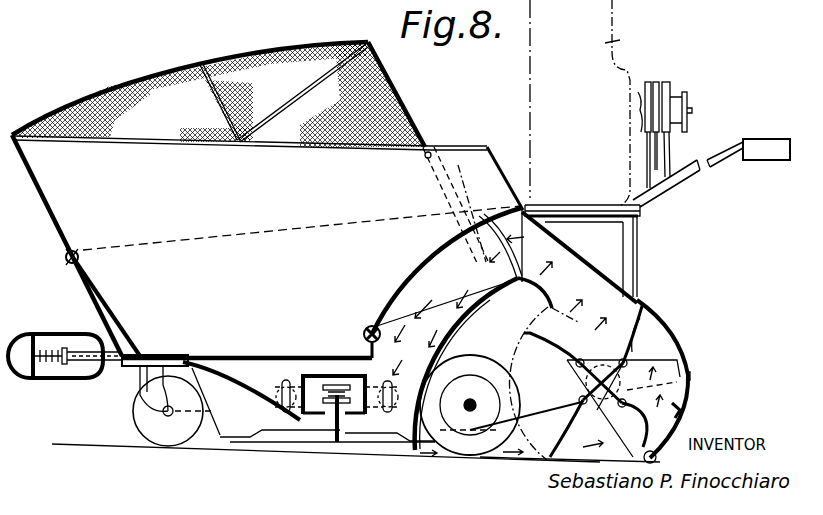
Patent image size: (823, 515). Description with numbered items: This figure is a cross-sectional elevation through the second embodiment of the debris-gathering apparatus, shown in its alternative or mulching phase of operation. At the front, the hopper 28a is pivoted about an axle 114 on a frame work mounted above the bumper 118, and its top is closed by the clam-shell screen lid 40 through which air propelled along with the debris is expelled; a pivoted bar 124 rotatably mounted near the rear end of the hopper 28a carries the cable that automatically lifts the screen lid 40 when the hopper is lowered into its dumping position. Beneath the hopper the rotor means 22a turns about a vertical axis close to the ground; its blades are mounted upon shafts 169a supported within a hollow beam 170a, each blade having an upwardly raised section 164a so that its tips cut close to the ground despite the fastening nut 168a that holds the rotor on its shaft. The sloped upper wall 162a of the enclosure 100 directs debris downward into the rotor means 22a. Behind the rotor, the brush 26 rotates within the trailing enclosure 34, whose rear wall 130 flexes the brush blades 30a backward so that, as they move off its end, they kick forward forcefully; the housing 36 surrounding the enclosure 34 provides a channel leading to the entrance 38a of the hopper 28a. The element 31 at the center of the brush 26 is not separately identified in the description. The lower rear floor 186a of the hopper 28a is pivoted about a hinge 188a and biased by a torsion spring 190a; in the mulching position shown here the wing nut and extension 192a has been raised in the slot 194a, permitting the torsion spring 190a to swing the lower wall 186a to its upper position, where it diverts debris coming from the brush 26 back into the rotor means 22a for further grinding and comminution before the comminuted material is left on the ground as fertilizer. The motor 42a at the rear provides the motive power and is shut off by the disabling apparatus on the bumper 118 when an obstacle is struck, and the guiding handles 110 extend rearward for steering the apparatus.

The screen lid 40 is at (176, 62).
The hopper 28a is at (246, 311).
The axle 114 is at (66, 258).
The rotor means 22a is at (286, 443).
The bumper 118 is at (58, 383).
The upper wall 162a is at (212, 370).
The enclosure 100 is at (373, 448).
The fastening nut 168a is at (342, 440).
The hollow beam 170a is at (322, 376).
The shafts 169a is at (333, 432).
The torsion spring 190a is at (364, 333).
The hinge 188a is at (367, 326).
The lower rear floor 186a is at (403, 285).
The slot 194a is at (494, 265).
The wing nut and extension 192a is at (459, 206).
The pivoted bar 124 is at (444, 170).
The entrance 38a is at (557, 266).
The motor 42a is at (618, 40).
The guiding handles 110 is at (769, 161).
The upwardly raised section 164a is at (384, 447).
The blades 30a is at (650, 342).
The housing 36 is at (637, 318).
The rear wall 130 is at (684, 397).
The trailing enclosure 34 is at (688, 388).
The brush 26 is at (567, 395).
The hub 31 is at (603, 364).